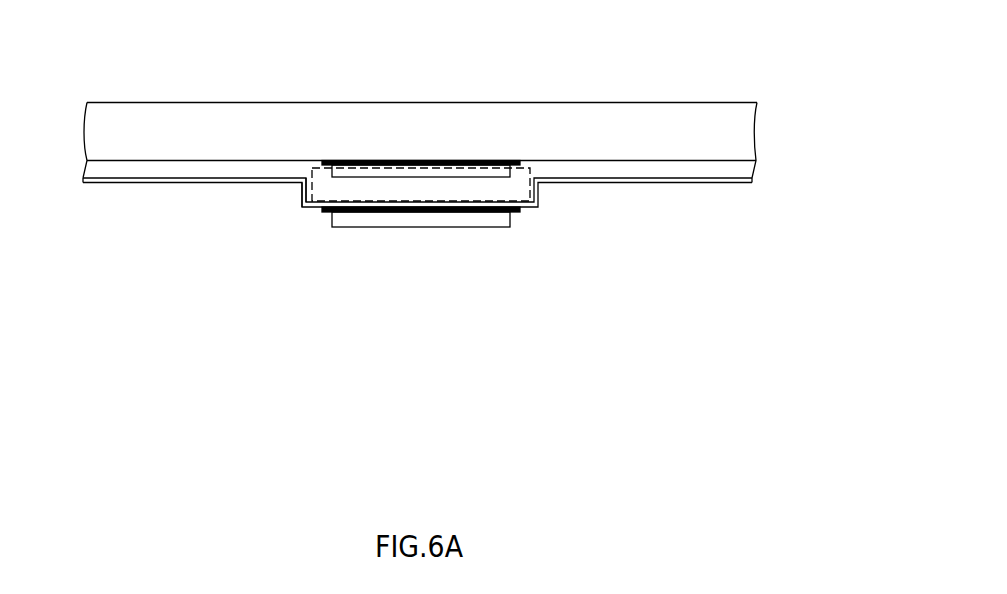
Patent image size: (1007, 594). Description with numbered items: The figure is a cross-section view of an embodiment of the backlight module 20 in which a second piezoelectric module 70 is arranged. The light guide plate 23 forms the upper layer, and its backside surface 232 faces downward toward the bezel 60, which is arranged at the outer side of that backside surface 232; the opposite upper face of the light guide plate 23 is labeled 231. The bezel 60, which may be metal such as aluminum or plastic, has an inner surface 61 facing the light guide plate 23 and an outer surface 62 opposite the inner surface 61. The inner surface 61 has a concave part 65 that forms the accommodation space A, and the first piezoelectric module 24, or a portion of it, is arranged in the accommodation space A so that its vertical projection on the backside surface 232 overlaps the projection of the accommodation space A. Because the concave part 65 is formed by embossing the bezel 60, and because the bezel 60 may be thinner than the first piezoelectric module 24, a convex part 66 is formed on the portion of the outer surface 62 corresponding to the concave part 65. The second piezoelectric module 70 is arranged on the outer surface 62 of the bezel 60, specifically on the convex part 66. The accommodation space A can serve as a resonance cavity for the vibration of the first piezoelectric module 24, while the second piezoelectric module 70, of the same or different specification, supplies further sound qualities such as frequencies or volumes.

The backlight module 20 is at (72, 30).
The light guide plate 23 is at (420, 148).
The upper surface of display panel 231 is at (636, 102).
The backside surface 232 is at (648, 162).
The first piezoelectric module 24 is at (490, 173).
The bezel 60 is at (433, 217).
The inner surface 61 is at (727, 178).
The outer surface 62 is at (713, 183).
The concave part 65 is at (300, 190).
The convex part 66 is at (320, 211).
The second piezoelectric module 70 is at (375, 220).
The accommodation space A is at (538, 183).